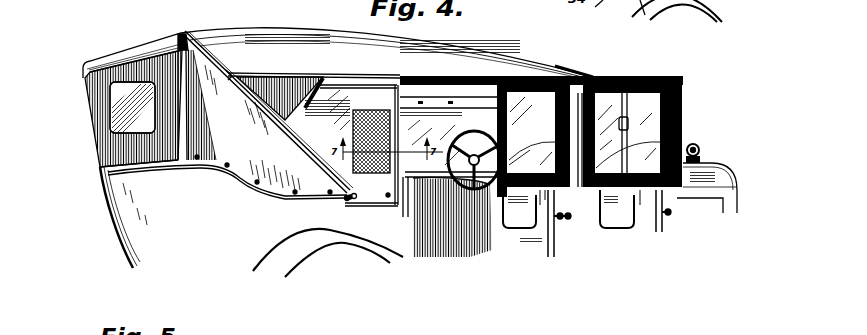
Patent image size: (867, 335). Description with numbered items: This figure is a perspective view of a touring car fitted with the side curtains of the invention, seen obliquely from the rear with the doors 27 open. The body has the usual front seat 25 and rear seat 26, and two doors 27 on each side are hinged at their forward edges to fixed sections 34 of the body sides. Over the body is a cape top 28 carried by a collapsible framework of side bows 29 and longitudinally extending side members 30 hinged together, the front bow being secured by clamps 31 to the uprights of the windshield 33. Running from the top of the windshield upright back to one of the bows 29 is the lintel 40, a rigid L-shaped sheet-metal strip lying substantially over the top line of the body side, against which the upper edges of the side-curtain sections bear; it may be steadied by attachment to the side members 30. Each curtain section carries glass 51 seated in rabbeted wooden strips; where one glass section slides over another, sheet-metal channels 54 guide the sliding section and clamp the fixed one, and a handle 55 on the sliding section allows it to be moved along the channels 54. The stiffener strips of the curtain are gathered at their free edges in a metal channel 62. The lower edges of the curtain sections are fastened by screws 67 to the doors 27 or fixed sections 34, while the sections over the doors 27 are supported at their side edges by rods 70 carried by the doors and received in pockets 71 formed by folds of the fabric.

The front seat 25 is at (467, 217).
The rear seat 26 is at (160, 183).
The doors 27 is at (540, 237).
The cape top 28 is at (313, 33).
The side bows 29 is at (242, 73).
The side members 30 is at (475, 80).
The clamps 31 is at (495, 78).
The windshield 33 is at (597, 75).
The fixed sections 34 is at (370, 218).
The lintel 40 is at (450, 78).
The glass 51 is at (670, 67).
The sheet-metal channels 54 is at (640, 100).
The handle 55 is at (630, 122).
The metal channel 62 is at (397, 203).
The screws 67 is at (345, 202).
The rods 70 is at (526, 226).
The pockets 71 is at (556, 121).